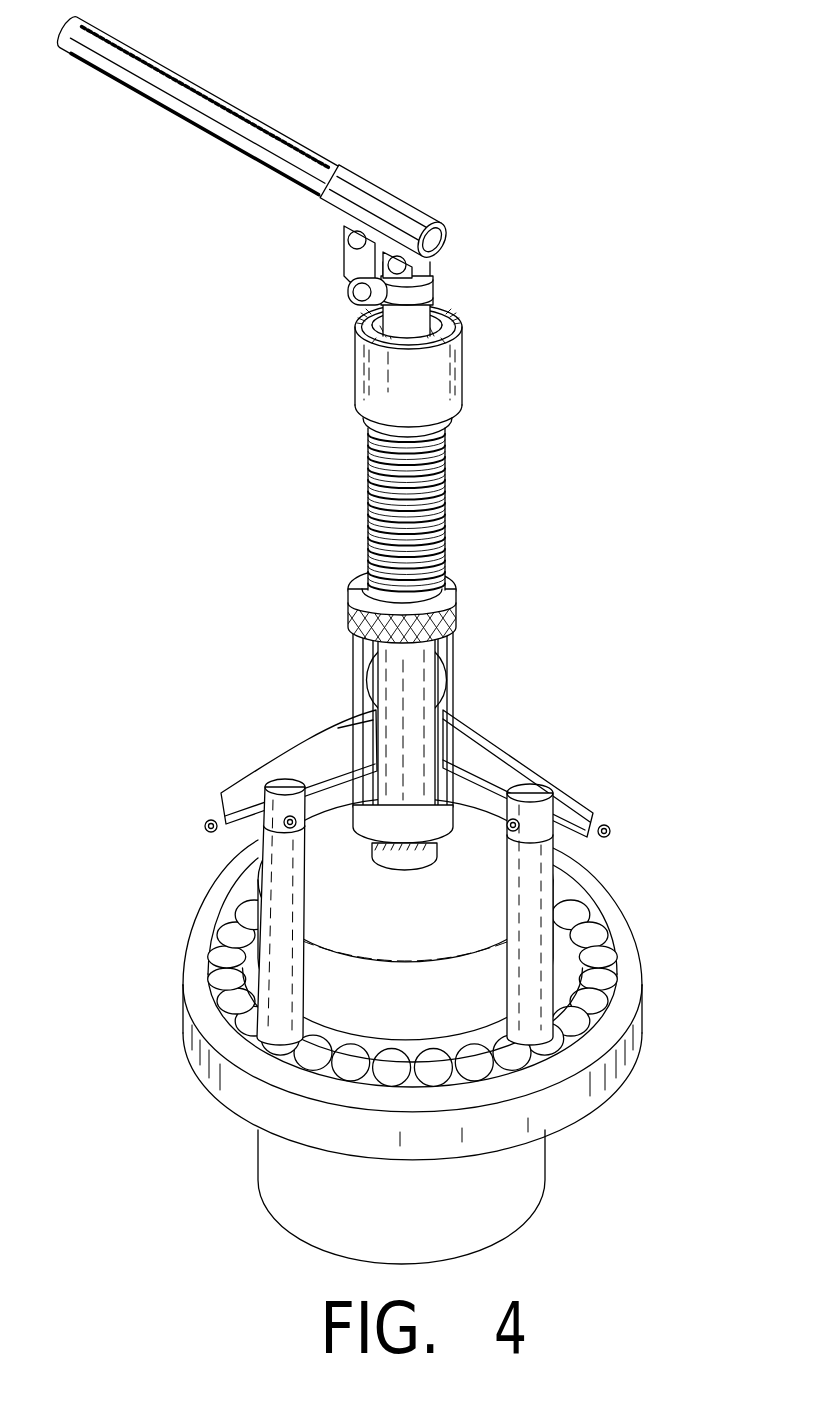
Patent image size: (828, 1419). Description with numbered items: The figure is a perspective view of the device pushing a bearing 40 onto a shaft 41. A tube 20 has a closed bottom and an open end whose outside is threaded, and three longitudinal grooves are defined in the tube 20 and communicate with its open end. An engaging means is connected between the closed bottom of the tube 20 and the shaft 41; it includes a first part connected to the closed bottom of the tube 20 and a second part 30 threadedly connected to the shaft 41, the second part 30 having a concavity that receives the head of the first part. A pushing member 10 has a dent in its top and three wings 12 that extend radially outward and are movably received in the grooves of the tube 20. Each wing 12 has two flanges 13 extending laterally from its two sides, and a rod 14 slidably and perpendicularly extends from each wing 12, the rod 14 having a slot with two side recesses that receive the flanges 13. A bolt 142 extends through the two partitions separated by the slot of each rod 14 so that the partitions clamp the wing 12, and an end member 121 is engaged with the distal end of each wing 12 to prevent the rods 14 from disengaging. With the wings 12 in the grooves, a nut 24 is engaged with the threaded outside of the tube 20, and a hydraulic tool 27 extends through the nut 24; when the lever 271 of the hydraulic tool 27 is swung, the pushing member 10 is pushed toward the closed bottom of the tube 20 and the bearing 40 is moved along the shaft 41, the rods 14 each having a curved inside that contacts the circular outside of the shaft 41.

The lever 271 is at (203, 117).
The hydraulic tool 27 is at (445, 495).
The nut 24 is at (455, 620).
The tube 20 is at (413, 725).
The pushing member 10 is at (512, 748).
The wing 12 is at (323, 740).
The bolt 142 is at (545, 797).
The end member 121 is at (612, 830).
The second part 30 is at (440, 857).
The flange 13 is at (207, 836).
The rod 14 is at (283, 937).
The bearing 40 is at (227, 1083).
The shaft 41 is at (527, 1170).